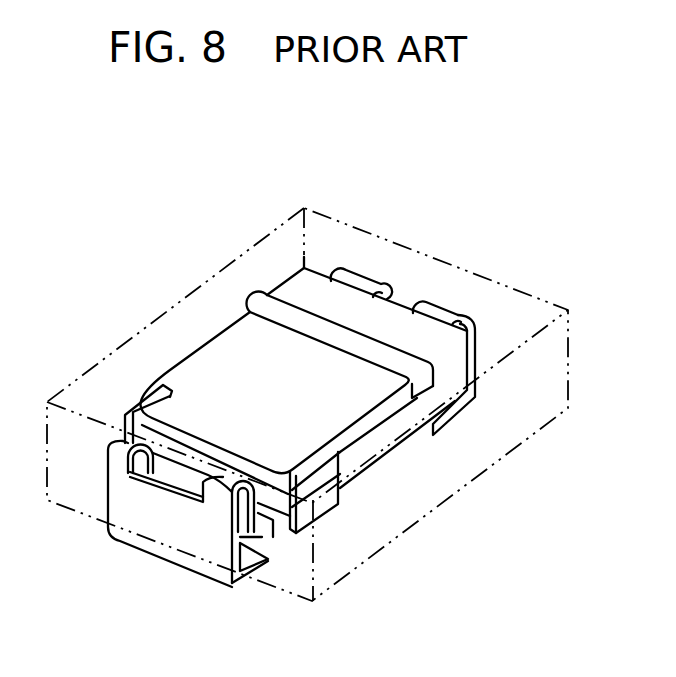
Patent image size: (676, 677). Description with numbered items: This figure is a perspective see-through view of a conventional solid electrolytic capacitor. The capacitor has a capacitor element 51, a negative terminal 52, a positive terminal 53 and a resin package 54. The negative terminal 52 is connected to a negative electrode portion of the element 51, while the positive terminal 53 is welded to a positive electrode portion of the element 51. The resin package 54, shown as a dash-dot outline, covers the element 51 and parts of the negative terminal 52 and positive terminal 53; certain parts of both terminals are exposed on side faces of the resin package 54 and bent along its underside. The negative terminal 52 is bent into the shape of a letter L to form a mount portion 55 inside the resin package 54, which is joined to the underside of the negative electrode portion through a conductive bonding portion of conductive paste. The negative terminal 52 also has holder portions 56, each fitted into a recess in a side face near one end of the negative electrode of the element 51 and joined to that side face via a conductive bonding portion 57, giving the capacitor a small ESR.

The capacitor element 51 is at (222, 378).
The negative terminal 52 is at (157, 523).
The positive terminal 53 is at (475, 343).
The resin package 54 is at (498, 413).
The mount portion 55 is at (273, 523).
The holder portion 56 is at (317, 487).
The conductive bonding portion 57 is at (340, 463).